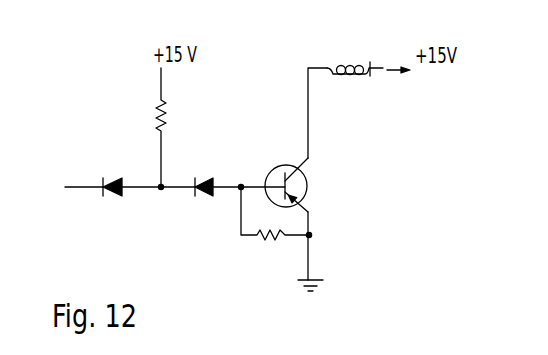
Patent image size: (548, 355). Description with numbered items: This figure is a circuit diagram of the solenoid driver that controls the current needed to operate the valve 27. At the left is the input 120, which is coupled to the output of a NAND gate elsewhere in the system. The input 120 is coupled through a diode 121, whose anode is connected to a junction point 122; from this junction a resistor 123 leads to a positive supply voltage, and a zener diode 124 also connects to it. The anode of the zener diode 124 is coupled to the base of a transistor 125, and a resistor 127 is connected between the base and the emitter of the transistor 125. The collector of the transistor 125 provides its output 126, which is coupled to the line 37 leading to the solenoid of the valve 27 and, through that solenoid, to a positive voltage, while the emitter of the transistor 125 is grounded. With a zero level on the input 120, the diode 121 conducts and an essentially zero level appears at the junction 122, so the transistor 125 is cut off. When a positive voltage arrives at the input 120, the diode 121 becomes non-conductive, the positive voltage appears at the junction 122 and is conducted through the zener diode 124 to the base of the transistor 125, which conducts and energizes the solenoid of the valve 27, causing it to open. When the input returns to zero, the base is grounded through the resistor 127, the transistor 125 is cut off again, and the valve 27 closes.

The input 120 is at (78, 185).
The diode 121 is at (113, 197).
The junction point 122 is at (161, 190).
The resistor 123 is at (168, 118).
The zener diode 124 is at (211, 197).
The transistor 125 is at (279, 166).
The output 126 is at (302, 168).
The resistor 127 is at (265, 240).
The line 37 is at (306, 93).
The valve 27 is at (369, 78).